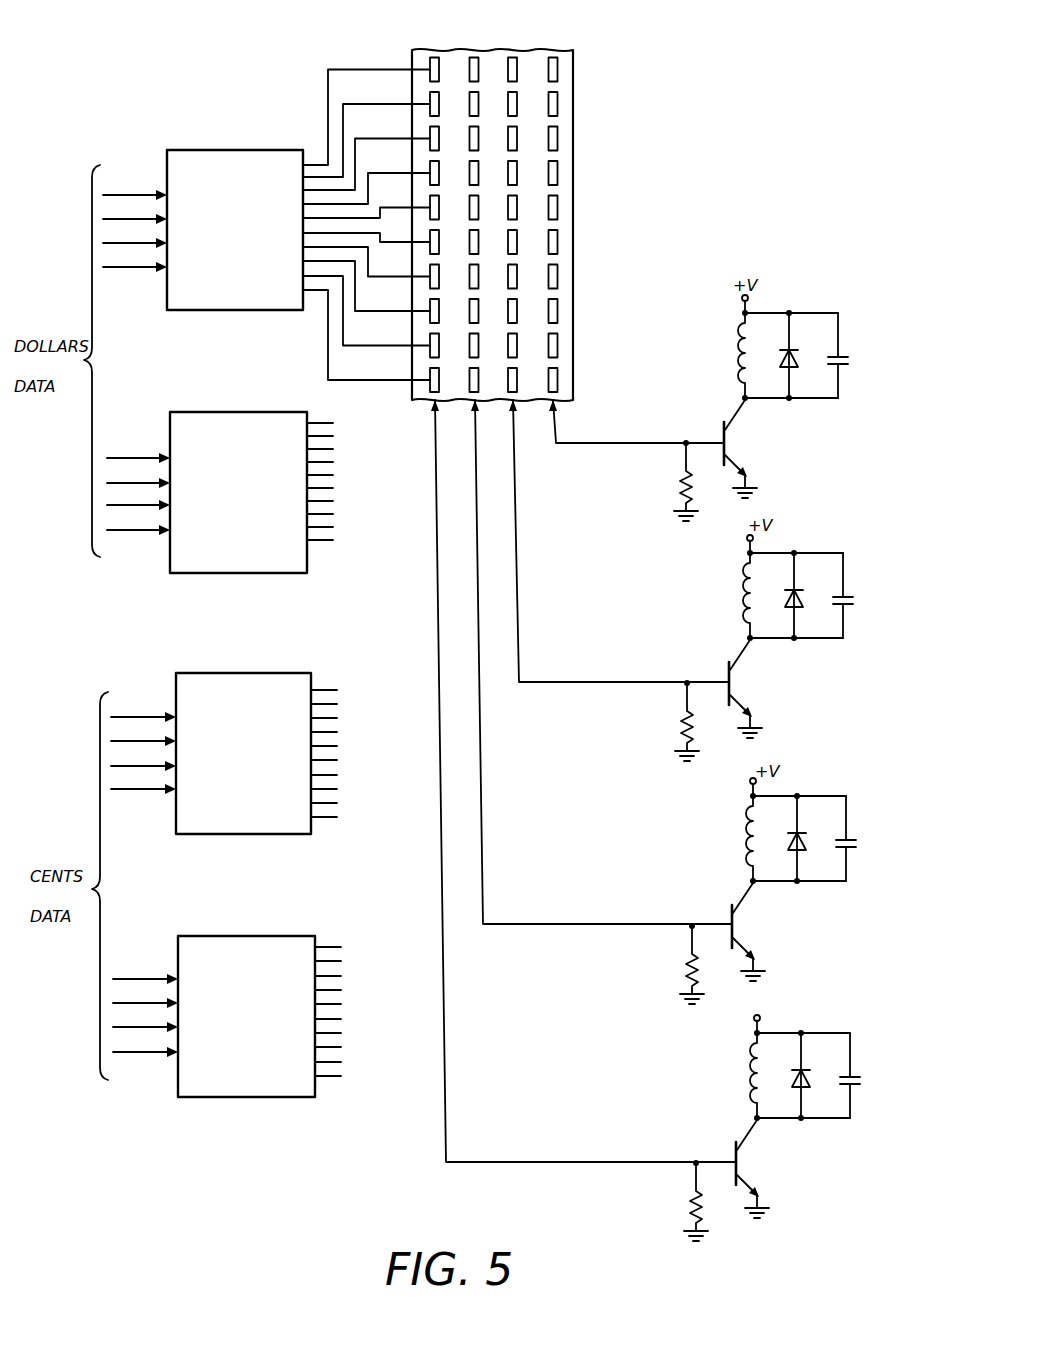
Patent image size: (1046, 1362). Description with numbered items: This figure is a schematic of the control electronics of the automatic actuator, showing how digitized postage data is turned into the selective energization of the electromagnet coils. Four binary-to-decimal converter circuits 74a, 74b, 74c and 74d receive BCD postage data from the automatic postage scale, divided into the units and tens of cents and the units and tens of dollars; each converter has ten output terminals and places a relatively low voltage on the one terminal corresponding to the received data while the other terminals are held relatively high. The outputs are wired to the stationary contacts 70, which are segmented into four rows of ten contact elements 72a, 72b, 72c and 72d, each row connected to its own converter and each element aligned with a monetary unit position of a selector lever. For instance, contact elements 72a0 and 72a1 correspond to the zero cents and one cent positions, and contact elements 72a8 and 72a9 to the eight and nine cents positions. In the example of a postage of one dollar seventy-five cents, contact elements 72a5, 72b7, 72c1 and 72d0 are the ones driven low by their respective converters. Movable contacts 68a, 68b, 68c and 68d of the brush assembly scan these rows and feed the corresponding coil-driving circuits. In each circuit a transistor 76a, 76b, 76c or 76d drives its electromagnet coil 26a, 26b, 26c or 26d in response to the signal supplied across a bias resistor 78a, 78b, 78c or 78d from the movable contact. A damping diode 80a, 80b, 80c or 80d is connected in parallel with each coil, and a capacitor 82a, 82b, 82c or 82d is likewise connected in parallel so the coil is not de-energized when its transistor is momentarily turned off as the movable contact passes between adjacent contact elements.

The stationary contacts 70 is at (506, 207).
The row of contact elements 72a is at (613, 202).
The row of contact elements 72b is at (574, 207).
The row of contact elements 72c is at (548, 207).
The row of contact elements 72d is at (384, 207).
The contact element 72a0 is at (558, 68).
The contact element 72a1 is at (558, 105).
The contact element 72a5 is at (558, 243).
The contact element 72a8 is at (558, 345).
The contact element 72a9 is at (558, 382).
The contact element 72b7 is at (518, 312).
The contact element 72c1 is at (478, 107).
The contact element 72d0 is at (438, 44).
The converter circuit 74a is at (238, 936).
The converter circuit 74b is at (231, 673).
The converter circuit 74c is at (246, 412).
The converter circuit 74d is at (252, 126).
The movable contact 68a is at (560, 424).
The movable contact 68b is at (520, 514).
The movable contact 68c is at (483, 708).
The movable contact 68d is at (440, 795).
The electromagnet coil 26a is at (738, 368).
The electromagnet coil 26b is at (715, 595).
The electromagnet coil 26c is at (710, 838).
The electromagnet coil 26d is at (709, 1075).
The transistor 76a is at (738, 428).
The transistor 76b is at (778, 689).
The transistor 76c is at (781, 932).
The transistor 76d is at (792, 1173).
The bias resistor 78a is at (683, 487).
The bias resistor 78b is at (657, 720).
The bias resistor 78c is at (654, 963).
The bias resistor 78d is at (660, 1200).
The damping diode 80a is at (800, 362).
The damping diode 80b is at (829, 572).
The damping diode 80c is at (836, 822).
The damping diode 80d is at (834, 1049).
The capacitor 82a is at (870, 347).
The capacitor 82b is at (863, 595).
The capacitor 82c is at (874, 838).
The capacitor 82d is at (854, 1098).